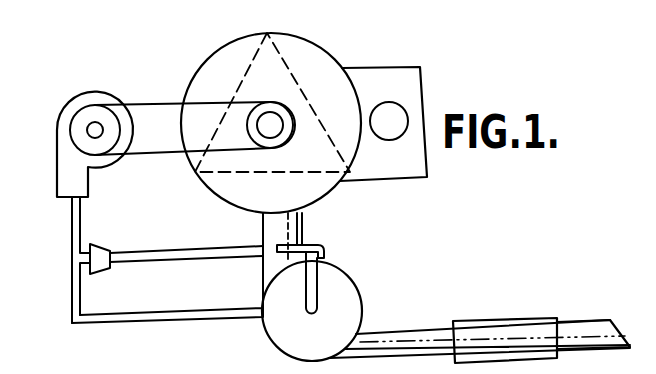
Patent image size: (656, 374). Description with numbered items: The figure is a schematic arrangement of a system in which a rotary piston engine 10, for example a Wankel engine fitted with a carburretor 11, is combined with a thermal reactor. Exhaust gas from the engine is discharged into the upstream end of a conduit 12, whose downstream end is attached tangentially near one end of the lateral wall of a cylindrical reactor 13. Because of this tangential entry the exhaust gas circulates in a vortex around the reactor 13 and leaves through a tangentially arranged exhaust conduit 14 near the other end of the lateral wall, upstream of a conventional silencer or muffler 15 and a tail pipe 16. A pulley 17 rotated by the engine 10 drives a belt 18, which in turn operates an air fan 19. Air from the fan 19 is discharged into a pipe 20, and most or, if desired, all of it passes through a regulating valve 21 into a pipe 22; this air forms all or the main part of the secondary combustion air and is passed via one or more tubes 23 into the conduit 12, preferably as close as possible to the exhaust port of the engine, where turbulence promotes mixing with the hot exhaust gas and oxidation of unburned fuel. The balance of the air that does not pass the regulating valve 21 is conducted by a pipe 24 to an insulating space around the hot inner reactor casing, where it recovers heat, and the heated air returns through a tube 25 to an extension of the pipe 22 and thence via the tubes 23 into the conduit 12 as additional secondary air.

The rotary piston engine 10 is at (339, 52).
The carburretor 11 is at (417, 82).
The conduit 12 is at (303, 223).
The cylindrical reactor 13 is at (353, 297).
The exhaust conduit 14 is at (406, 330).
The silencer or muffler 15 is at (499, 320).
The tail pipe 16 is at (580, 322).
The pulley 17 is at (281, 135).
The belt 18 is at (156, 106).
The air fan 19 is at (96, 86).
The pipe 20 is at (75, 221).
The regulating valve 21 is at (100, 246).
The pipe 22 is at (160, 255).
The tubes 23 is at (277, 243).
The pipe 24 is at (160, 318).
The tube 25 is at (318, 278).